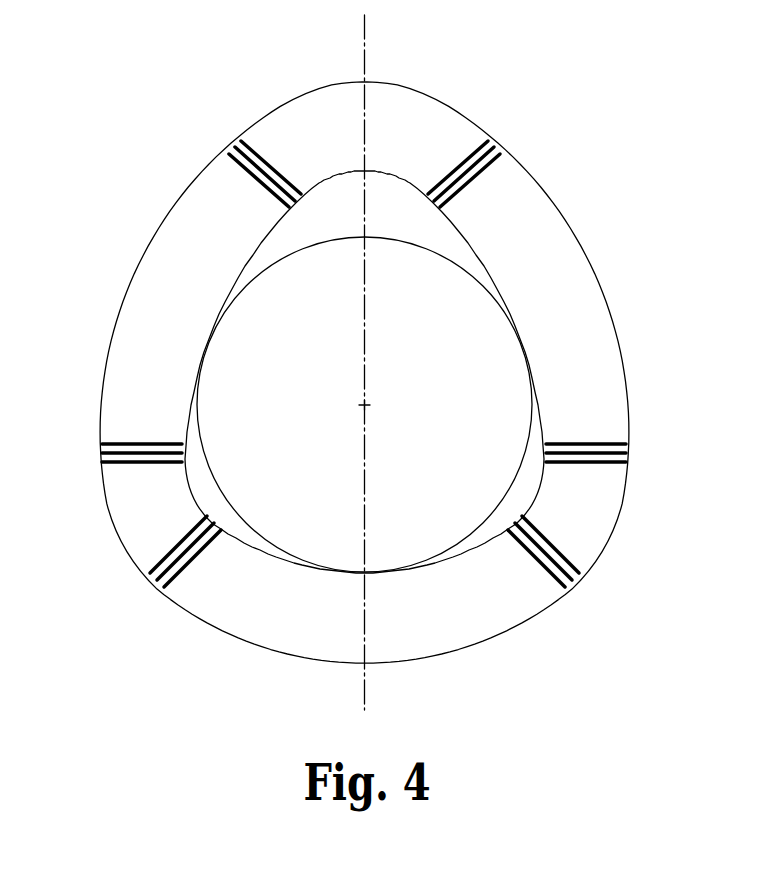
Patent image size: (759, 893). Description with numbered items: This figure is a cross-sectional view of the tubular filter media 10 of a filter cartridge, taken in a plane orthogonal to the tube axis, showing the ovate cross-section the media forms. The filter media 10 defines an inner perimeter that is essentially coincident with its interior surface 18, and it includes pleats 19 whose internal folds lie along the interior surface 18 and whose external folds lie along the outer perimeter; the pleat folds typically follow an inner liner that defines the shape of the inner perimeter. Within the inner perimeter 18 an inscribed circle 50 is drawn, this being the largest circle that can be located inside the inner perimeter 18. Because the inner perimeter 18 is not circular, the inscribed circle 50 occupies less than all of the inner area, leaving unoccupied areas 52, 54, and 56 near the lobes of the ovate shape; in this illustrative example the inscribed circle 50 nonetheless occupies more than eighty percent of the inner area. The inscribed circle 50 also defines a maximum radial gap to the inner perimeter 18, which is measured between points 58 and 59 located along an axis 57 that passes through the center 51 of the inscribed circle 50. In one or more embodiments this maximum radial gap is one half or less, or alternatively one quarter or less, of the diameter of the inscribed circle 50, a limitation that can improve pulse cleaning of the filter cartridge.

The tubular filter media 10 is at (601, 84).
The interior surface 18 is at (277, 225).
The pleats 19 is at (253, 142).
The inscribed circle 50 is at (443, 257).
The center 51 is at (367, 405).
The area 52 is at (398, 200).
The area 54 is at (207, 495).
The area 56 is at (520, 493).
The axis 57 is at (366, 692).
The point 58 is at (366, 239).
The point 59 is at (367, 168).